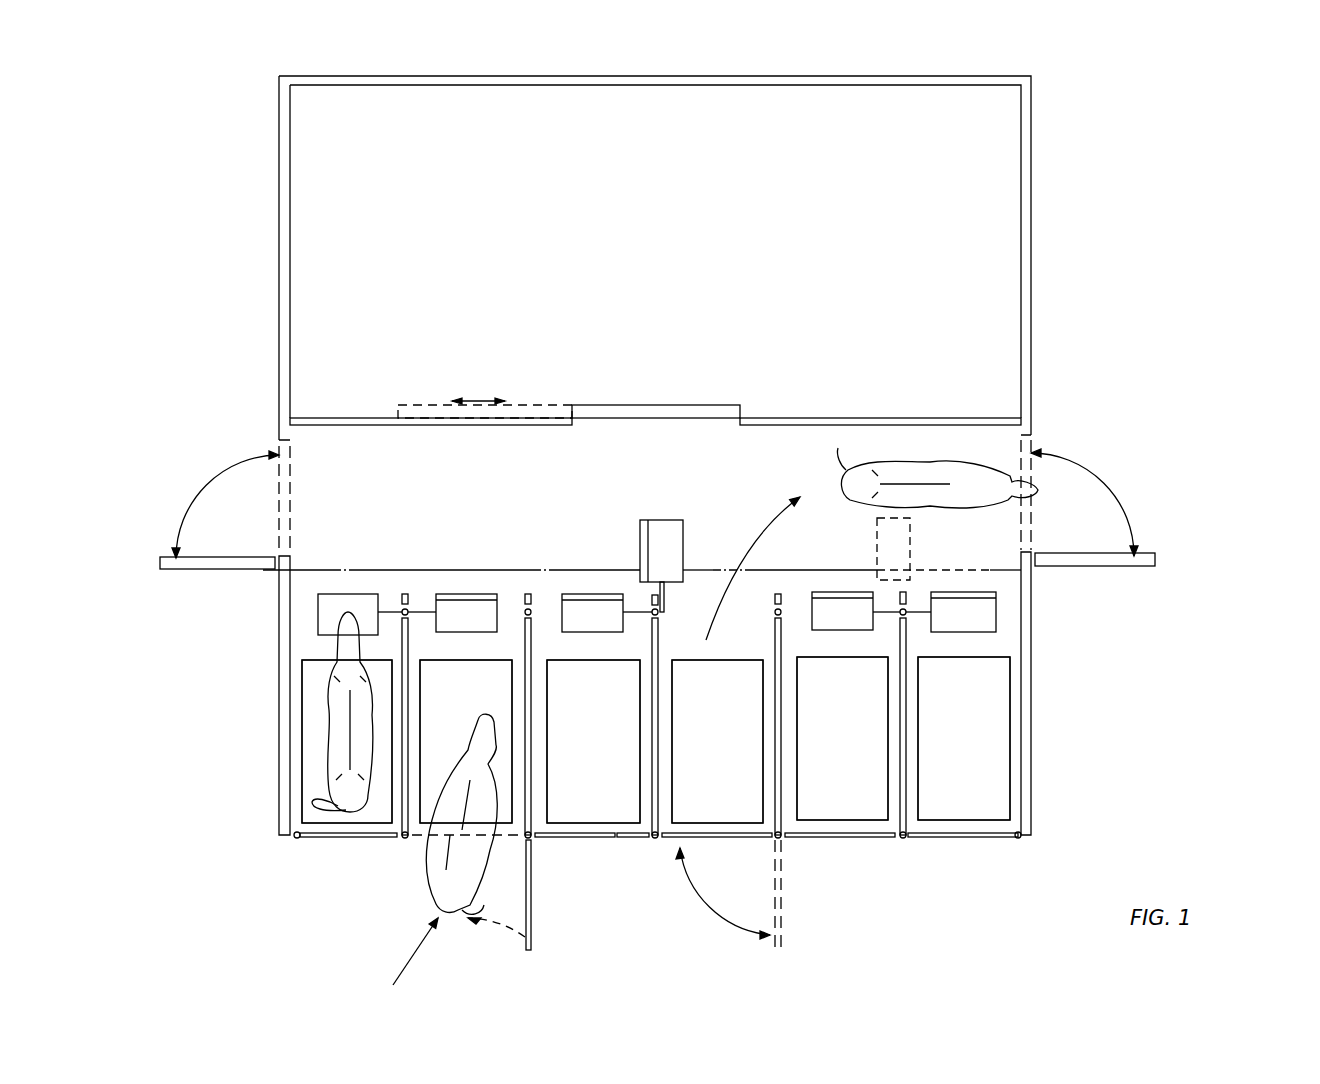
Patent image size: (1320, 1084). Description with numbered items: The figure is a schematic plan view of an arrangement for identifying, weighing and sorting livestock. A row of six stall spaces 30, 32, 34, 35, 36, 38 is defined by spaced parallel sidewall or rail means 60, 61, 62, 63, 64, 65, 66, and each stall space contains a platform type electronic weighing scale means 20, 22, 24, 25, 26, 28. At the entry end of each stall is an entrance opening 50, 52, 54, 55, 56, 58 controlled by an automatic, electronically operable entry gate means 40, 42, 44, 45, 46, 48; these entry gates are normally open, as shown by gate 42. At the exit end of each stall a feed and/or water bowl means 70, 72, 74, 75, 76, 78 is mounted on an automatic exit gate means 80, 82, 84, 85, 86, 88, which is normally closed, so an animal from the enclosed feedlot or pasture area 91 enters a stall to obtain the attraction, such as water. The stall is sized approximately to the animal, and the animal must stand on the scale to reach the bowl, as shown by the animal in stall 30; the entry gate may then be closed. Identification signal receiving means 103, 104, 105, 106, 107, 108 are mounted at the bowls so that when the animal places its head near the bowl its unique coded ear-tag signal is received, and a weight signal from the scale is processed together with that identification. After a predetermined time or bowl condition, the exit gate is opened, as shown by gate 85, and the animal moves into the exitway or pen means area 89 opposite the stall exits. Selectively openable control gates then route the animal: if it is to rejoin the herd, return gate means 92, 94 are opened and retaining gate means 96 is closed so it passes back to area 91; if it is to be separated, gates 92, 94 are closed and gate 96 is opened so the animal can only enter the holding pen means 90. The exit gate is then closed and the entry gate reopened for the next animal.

The platform type electronic weighing scale means 20 is at (300, 740).
The platform type electronic weighing scale means 22 is at (483, 703).
The platform type electronic weighing scale means 24 is at (604, 706).
The platform type electronic weighing scale means 25 is at (729, 708).
The platform type electronic weighing scale means 26 is at (853, 709).
The platform type electronic weighing scale means 28 is at (988, 709).
The stall space 30 is at (300, 648).
The stall space 32 is at (420, 738).
The stall space 34 is at (547, 765).
The stall space 35 is at (672, 760).
The stall space 36 is at (797, 758).
The stall space 38 is at (918, 750).
The entry gate means 40 is at (348, 840).
The entry gate means 42 is at (533, 898).
The entry gate means 44 is at (606, 840).
The entry gate means 45 is at (722, 840).
The entry gate means 46 is at (848, 840).
The entry gate means 48 is at (958, 840).
The entrance opening 50 is at (297, 840).
The entrance opening 52 is at (412, 840).
The entrance opening 54 is at (540, 840).
The entrance opening 55 is at (660, 842).
The entrance opening 56 is at (785, 840).
The entrance opening 58 is at (905, 842).
The sidewall or rail means 60 is at (285, 700).
The sidewall or rail means 61 is at (408, 655).
The sidewall or rail means 62 is at (531, 655).
The sidewall or rail means 63 is at (658, 652).
The sidewall or rail means 64 is at (775, 640).
The sidewall or rail means 65 is at (900, 645).
The sidewall or rail means 66 is at (1030, 648).
The feed and/or water bowl means 70 is at (318, 618).
The feed and/or water bowl means 72 is at (478, 626).
The feed and/or water bowl means 74 is at (603, 626).
The feed and/or water bowl means 75 is at (676, 530).
The feed and/or water bowl means 76 is at (854, 624).
The feed and/or water bowl means 78 is at (975, 618).
The exit gate means 80 is at (388, 612).
The exit gate means 82 is at (416, 610).
The exit gate means 84 is at (632, 608).
The exit gate means 85 is at (665, 603).
The exit gate means 86 is at (875, 556).
The exit gate means 88 is at (905, 600).
The exitway or pen means area 89 is at (585, 496).
The holding pen means 90 is at (666, 217).
The enclosed feedlot or pasture area 91 is at (160, 302).
The return gate means 92 is at (215, 566).
The return gate means 94 is at (1108, 566).
The retaining gate means 96 is at (688, 405).
The identification signal receiving means 103 is at (333, 594).
The identification signal receiving means 104 is at (462, 594).
The identification signal receiving means 105 is at (568, 594).
The identification signal receiving means 106 is at (640, 530).
The identification signal receiving means 107 is at (820, 592).
The identification signal receiving means 108 is at (975, 592).